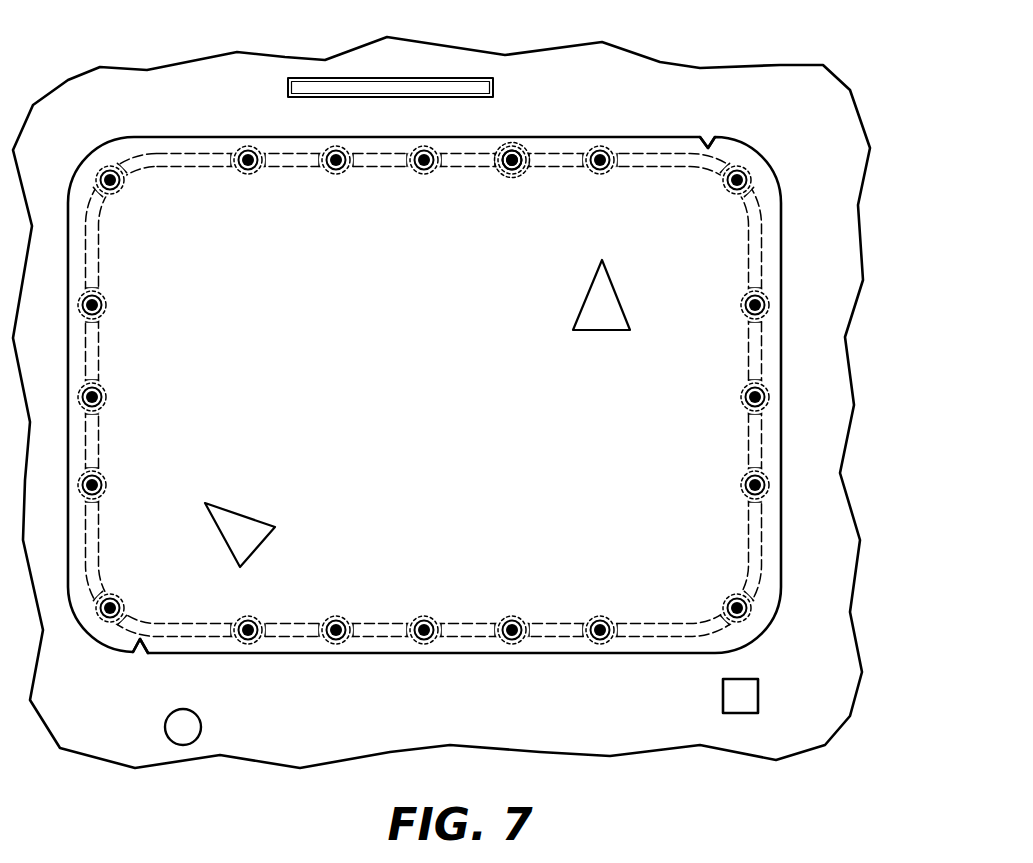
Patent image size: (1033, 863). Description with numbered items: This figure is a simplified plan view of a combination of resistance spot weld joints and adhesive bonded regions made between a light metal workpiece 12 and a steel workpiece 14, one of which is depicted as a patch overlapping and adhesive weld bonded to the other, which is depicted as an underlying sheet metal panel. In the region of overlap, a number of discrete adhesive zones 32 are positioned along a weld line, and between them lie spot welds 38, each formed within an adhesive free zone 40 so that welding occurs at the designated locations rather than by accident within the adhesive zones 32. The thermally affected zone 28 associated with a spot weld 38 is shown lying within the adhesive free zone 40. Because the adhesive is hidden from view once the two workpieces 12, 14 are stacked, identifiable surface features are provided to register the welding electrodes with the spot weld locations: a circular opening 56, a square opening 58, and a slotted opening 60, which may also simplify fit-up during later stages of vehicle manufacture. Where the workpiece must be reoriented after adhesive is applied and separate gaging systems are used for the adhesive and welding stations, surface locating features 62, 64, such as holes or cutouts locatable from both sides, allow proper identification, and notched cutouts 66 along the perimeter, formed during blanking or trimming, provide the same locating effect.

The light metal workpiece 12 is at (781, 182).
The steel workpiece 14 is at (862, 250).
The thermally affected zone 28 is at (517, 145).
The adhesive zone 32 is at (597, 208).
The spot weld 38 is at (531, 140).
The adhesive free zone 40 is at (520, 172).
The circular opening 56 is at (201, 716).
The square opening 58 is at (722, 695).
The slotted opening 60 is at (493, 87).
The surface locating feature 62 is at (248, 512).
The surface locating feature 64 is at (585, 296).
The notched cutout 66 is at (140, 645).